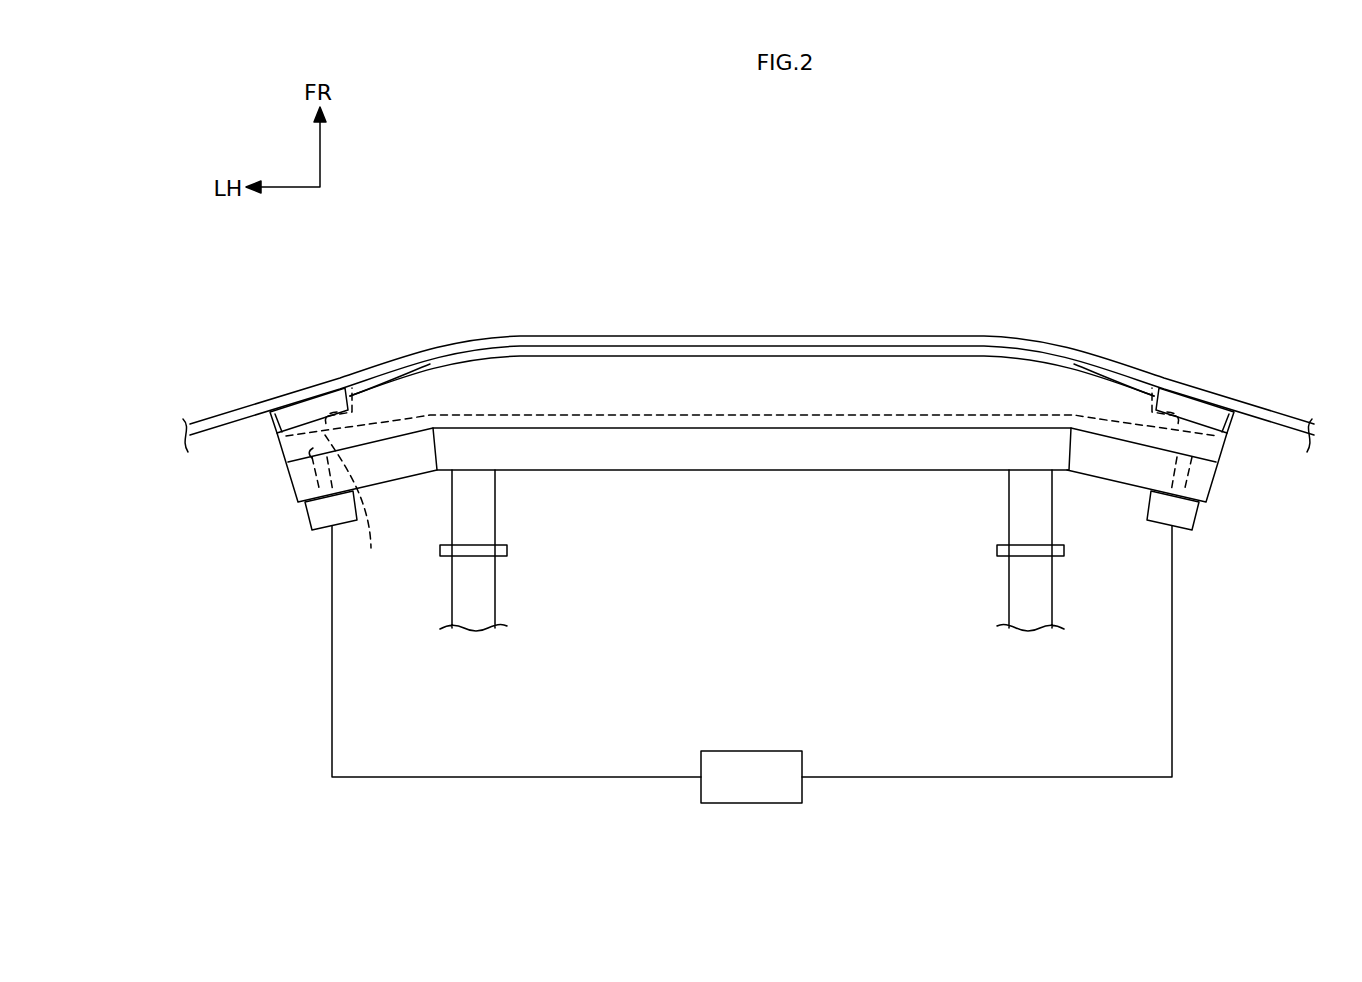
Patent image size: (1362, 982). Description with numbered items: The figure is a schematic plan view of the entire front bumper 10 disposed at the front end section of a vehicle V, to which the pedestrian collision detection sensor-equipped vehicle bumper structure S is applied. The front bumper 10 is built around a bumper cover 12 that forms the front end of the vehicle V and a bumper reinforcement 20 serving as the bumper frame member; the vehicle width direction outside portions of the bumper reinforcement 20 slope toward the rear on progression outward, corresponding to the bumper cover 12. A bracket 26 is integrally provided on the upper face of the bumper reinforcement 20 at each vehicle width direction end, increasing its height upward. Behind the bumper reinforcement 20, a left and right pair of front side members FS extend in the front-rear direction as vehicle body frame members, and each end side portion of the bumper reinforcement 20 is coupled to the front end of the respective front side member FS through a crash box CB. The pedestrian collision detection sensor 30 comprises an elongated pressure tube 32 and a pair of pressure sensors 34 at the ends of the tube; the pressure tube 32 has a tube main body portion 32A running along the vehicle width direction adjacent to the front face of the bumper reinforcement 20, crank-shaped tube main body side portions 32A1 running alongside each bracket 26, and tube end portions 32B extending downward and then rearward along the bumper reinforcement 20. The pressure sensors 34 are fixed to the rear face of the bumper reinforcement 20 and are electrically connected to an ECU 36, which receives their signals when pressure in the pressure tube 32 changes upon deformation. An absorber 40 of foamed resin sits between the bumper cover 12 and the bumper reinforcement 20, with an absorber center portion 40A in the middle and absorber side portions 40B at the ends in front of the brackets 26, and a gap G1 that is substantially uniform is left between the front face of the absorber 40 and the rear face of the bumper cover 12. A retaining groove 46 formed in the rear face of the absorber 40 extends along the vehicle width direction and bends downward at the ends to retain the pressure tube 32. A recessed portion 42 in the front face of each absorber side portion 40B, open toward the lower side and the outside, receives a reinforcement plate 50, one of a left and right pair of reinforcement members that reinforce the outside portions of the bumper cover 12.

The front bumper 10 is at (873, 260).
The bumper cover 12 is at (675, 337).
The bumper reinforcement 20 is at (741, 472).
The bracket 26 is at (404, 467).
The pedestrian collision detection sensor 30 is at (280, 520).
The pressure tube 32 is at (749, 419).
The tube main body portion 32A is at (510, 423).
The tube main body side portion 32A1 is at (383, 426).
The tube end portion 32B is at (313, 448).
The pressure sensor 34 is at (316, 530).
The ECU 36 is at (752, 805).
The absorber 40 is at (733, 353).
The absorber center portion 40A is at (790, 373).
The absorber side portion 40B is at (400, 385).
The recessed portion 42 is at (382, 572).
The retaining groove 46 is at (807, 420).
The reinforcement plate 50 is at (269, 427).
The crash box CB is at (497, 515).
The front side member FS is at (497, 595).
The pedestrian collision detection sensor-equipped vehicle bumper structure S is at (966, 276).
The vehicle V is at (1041, 162).
The gap G1 is at (613, 354).